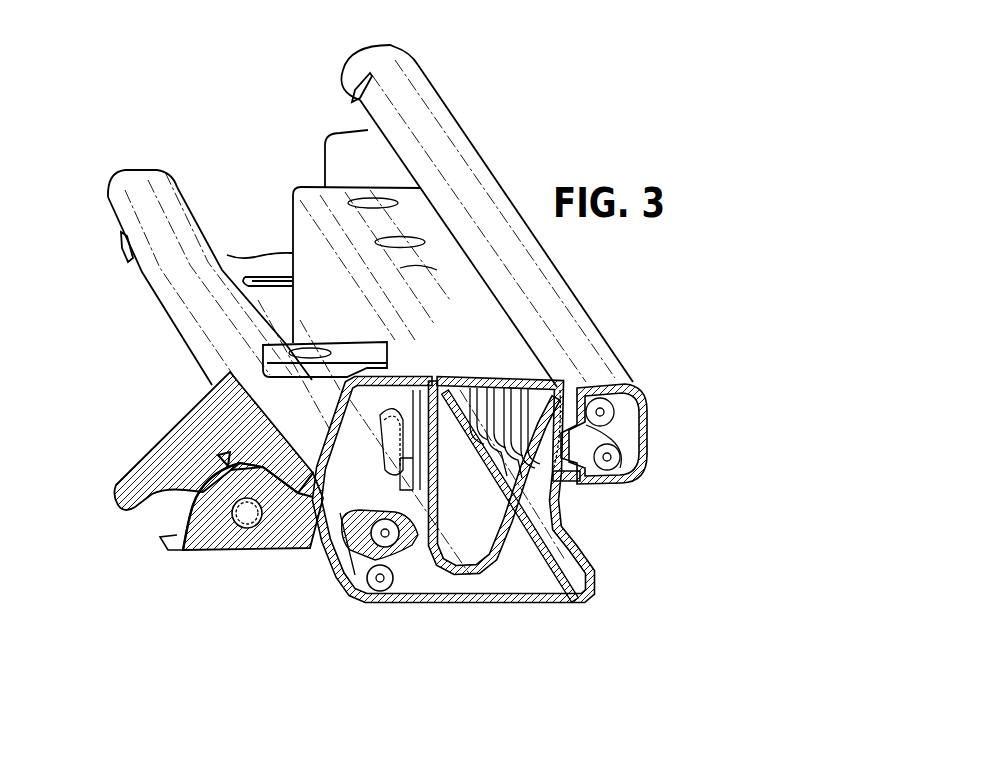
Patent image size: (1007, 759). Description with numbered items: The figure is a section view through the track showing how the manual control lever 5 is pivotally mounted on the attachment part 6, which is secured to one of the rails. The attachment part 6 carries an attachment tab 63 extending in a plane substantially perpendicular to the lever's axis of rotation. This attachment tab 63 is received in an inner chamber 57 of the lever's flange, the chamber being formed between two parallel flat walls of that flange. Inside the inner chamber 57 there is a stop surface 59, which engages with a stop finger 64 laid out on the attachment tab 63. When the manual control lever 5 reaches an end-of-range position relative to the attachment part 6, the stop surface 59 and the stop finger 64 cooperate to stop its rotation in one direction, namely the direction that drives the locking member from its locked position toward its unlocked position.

The manual control lever 5 is at (117, 503).
The attachment part 6 is at (322, 330).
The inner chamber 57 is at (217, 473).
The stop surface 59 is at (223, 460).
The attachment tab 63 is at (263, 548).
The stop finger 64 is at (203, 552).